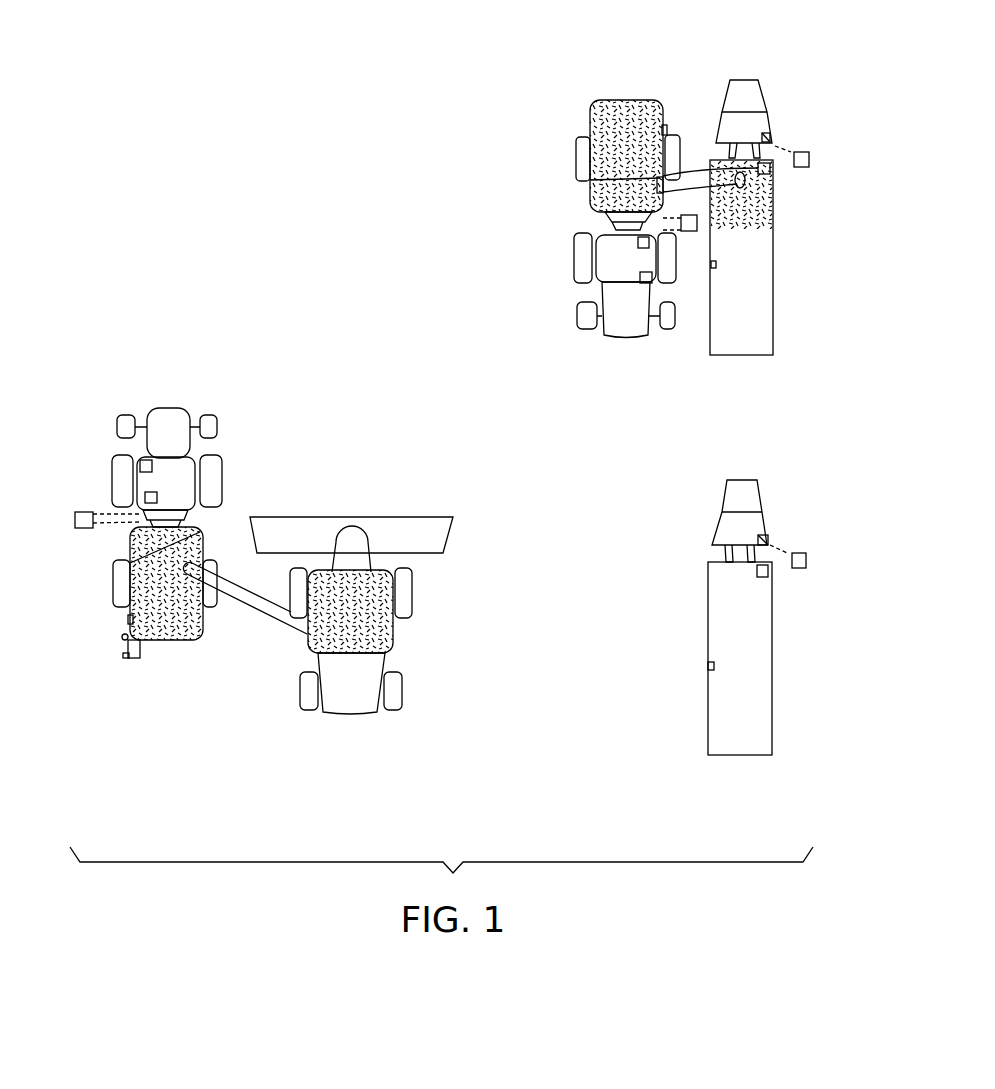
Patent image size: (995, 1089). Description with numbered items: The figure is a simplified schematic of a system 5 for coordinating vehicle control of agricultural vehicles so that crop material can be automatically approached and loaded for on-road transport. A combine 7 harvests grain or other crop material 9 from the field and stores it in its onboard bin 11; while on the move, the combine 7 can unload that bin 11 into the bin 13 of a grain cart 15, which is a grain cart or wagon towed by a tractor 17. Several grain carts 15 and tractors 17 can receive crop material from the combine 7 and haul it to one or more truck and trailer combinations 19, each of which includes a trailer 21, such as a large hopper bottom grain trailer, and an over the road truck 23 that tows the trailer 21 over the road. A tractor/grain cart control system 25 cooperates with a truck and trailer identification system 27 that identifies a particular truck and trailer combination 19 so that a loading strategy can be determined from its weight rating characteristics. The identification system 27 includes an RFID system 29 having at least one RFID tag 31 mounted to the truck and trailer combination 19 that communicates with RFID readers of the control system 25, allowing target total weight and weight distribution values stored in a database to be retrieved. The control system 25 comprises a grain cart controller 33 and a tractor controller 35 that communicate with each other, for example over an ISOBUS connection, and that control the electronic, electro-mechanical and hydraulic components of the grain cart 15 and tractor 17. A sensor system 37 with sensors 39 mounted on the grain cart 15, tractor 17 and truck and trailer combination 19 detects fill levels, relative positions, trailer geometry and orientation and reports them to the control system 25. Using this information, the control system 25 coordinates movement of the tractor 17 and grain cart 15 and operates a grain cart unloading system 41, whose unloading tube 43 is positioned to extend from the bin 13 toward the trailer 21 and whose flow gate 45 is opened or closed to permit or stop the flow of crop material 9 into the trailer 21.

The system 5 is at (336, 120).
The combine 7 is at (397, 634).
The crop material 9 is at (609, 102).
The onboard bin 11 is at (383, 617).
The bin 13 is at (637, 100).
The grain cart 15 is at (580, 111).
The tractor 17 is at (558, 250).
The truck and trailer combination 19 is at (800, 190).
The trailer 21 is at (773, 337).
The over the road truck 23 is at (766, 98).
The tractor/grain cart control system 25 is at (690, 235).
The truck and trailer identification system 27 is at (803, 142).
The RFID system 29 is at (775, 173).
The RFID tag 31 is at (770, 130).
The grain cart controller 33 is at (603, 217).
The tractor controller 35 is at (637, 277).
The sensor system 37 is at (688, 160).
The sensors 39 is at (665, 130).
The grain cart unloading system 41 is at (699, 160).
The unloading tube 43 is at (707, 160).
The flow gate 45 is at (590, 177).